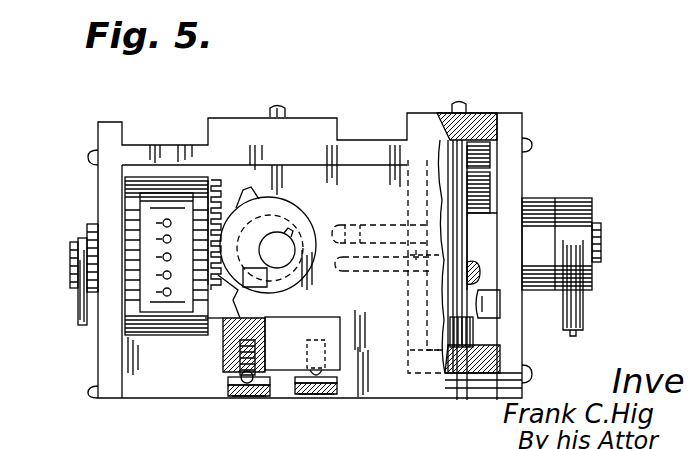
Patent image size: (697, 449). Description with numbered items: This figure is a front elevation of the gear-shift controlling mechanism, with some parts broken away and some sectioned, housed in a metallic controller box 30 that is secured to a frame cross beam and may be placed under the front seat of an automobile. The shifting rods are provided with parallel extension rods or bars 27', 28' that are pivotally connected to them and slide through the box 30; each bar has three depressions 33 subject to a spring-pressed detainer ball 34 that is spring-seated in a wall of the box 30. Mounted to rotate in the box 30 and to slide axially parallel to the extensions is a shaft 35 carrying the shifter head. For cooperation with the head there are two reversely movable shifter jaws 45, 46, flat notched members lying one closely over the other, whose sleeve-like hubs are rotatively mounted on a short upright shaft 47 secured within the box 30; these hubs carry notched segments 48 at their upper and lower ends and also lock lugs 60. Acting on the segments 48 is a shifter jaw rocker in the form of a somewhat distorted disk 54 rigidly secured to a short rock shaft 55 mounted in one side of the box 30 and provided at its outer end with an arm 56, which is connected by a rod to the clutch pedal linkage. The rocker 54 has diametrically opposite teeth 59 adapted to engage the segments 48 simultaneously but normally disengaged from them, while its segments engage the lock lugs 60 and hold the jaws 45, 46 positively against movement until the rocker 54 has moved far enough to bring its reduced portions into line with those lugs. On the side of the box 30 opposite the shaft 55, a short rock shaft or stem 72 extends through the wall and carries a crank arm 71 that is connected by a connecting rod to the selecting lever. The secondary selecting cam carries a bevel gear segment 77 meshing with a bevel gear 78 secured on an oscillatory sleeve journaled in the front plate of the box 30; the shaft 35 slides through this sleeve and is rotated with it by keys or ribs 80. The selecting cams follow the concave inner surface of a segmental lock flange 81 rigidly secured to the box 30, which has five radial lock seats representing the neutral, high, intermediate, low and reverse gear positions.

The controller box 30 is at (108, 187).
The short rock shaft or stem 72 is at (67, 262).
The crank arm 71 is at (80, 310).
The segmental lock flange or plate 81 is at (172, 338).
The bevel gear segment 77 is at (207, 188).
The bevel gear 78 is at (262, 213).
The keys or ribs 80 is at (262, 243).
The shaft 35 is at (290, 244).
The shifter jaw 45 is at (387, 237).
The shifter jaw 46 is at (382, 265).
The lock lugs 60 is at (457, 303).
The short upright shaft 47 is at (438, 135).
The notched segments 48 is at (482, 152).
The teeth or lugs 59 is at (490, 183).
The shifter jaw rocker 54 is at (477, 227).
The short rock shaft 55 is at (602, 250).
The arm 56 is at (585, 315).
The spring-pressed detainer ball 34 is at (312, 377).
The depressions 33 is at (230, 383).
The extension rod or bar 28' is at (232, 410).
The extension rod or bar 27' is at (324, 410).